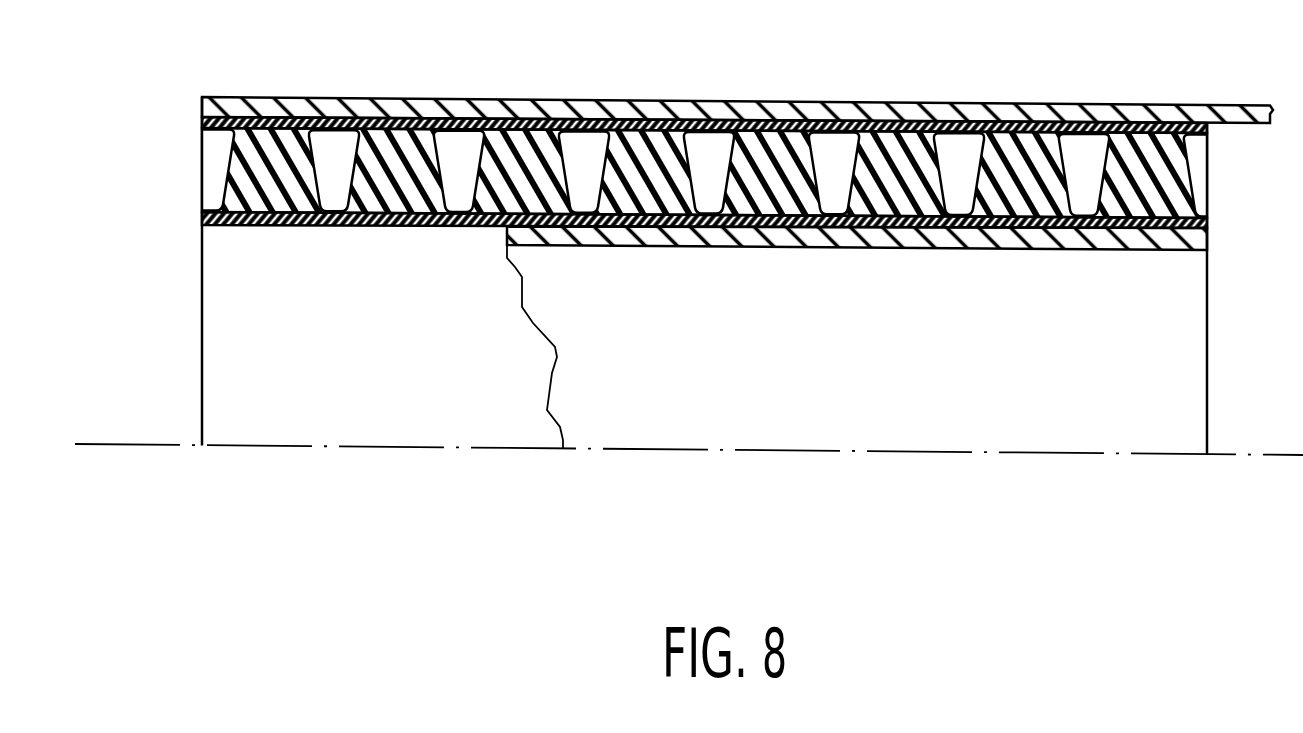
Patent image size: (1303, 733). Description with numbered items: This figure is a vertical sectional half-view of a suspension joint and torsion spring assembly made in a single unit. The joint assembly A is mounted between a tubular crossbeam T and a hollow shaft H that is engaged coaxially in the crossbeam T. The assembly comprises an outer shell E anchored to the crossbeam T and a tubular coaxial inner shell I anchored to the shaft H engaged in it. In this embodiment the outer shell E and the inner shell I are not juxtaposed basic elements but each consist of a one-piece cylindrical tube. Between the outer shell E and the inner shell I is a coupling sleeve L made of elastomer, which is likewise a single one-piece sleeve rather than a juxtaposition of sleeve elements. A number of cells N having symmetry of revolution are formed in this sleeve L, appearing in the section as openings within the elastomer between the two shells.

The joint assembly A is at (178, 178).
The coupling sleeve L is at (402, 135).
The tubular crossbeam T is at (700, 108).
The cells N is at (832, 158).
The outer shell E is at (1208, 130).
The inner shell I is at (1208, 223).
The hollow shaft H is at (860, 245).